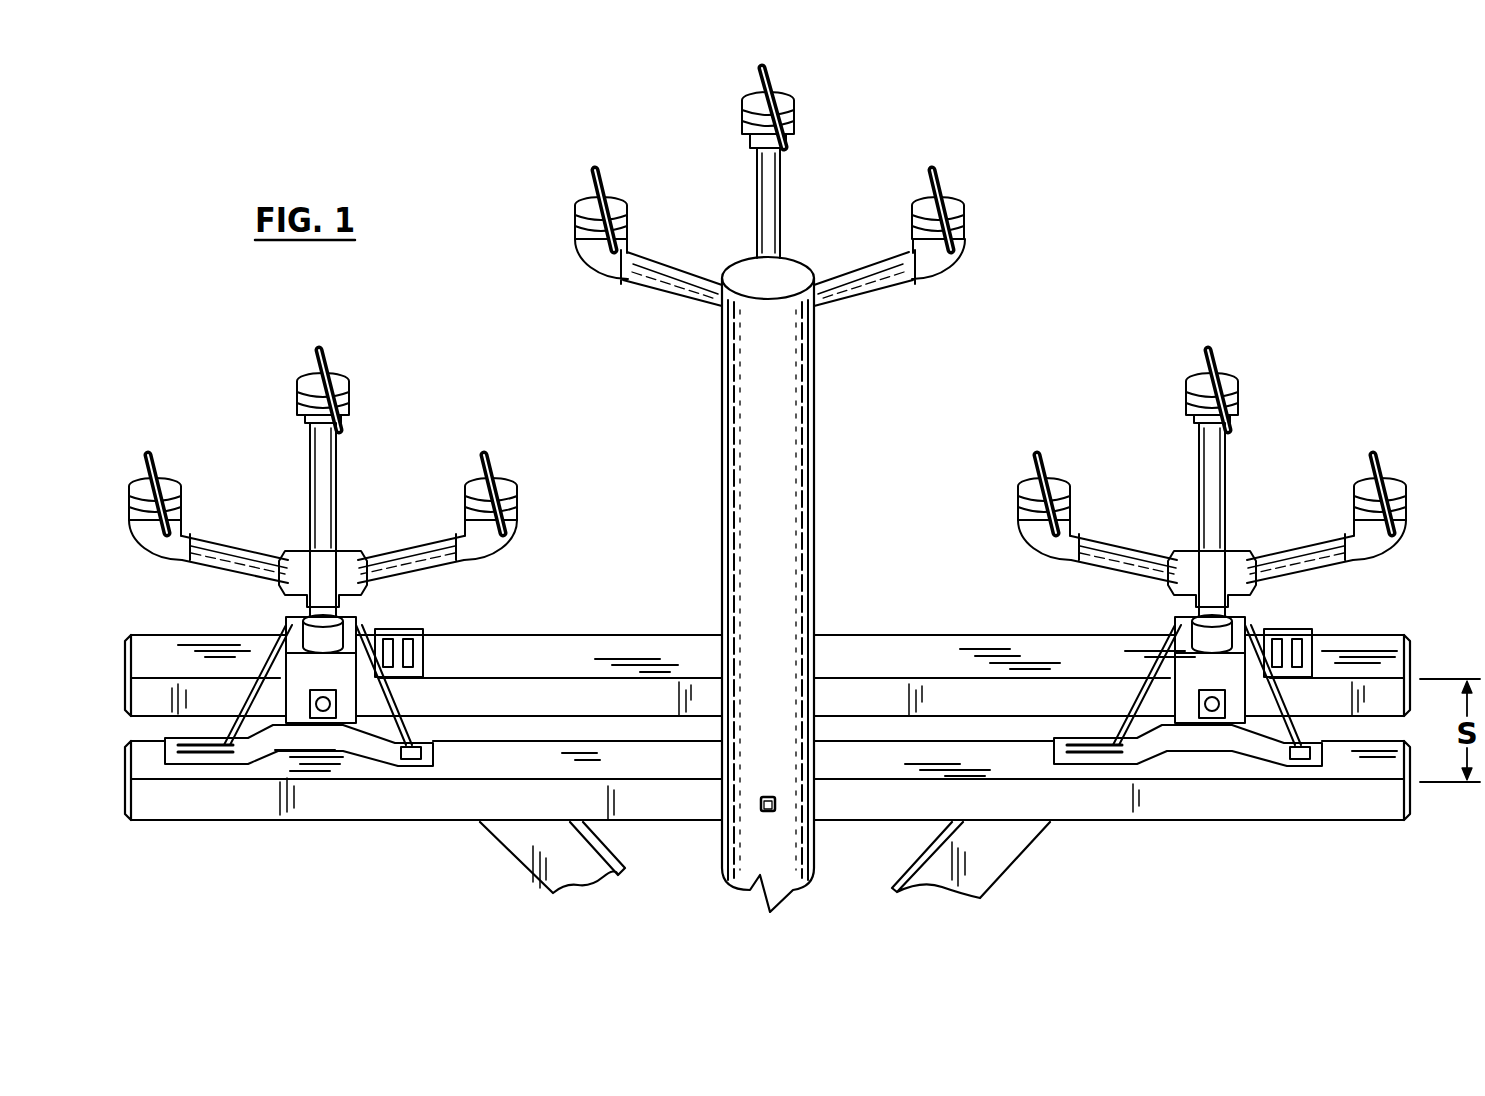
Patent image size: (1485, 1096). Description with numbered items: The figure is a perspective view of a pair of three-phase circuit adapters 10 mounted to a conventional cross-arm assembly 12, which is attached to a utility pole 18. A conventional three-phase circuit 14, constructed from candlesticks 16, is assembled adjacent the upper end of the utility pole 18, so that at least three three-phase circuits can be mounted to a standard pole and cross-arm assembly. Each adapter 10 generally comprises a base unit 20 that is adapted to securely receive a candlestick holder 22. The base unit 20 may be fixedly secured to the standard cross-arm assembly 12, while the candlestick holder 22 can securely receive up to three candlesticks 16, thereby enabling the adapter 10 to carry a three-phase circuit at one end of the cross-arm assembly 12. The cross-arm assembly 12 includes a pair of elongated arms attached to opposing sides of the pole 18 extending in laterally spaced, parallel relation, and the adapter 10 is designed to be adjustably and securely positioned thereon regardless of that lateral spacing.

The 3-phase circuit adapter 10 is at (240, 452).
The cross-arm assembly 12 is at (1175, 815).
The 3-phase circuit 14 is at (816, 479).
The candlestick 16 is at (757, 185).
The utility pole 18 is at (810, 845).
The base unit 20 is at (270, 670).
The candlestick holder 22 is at (325, 578).